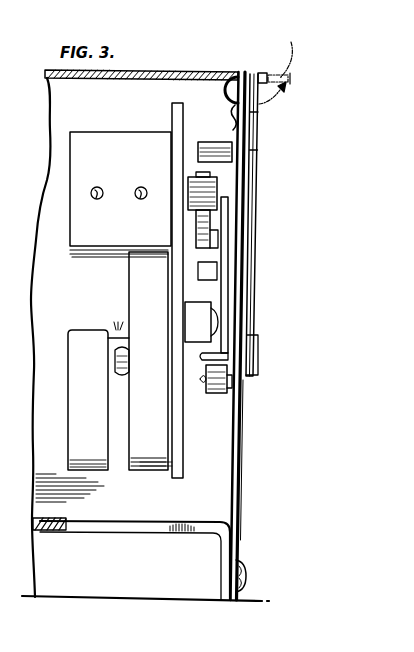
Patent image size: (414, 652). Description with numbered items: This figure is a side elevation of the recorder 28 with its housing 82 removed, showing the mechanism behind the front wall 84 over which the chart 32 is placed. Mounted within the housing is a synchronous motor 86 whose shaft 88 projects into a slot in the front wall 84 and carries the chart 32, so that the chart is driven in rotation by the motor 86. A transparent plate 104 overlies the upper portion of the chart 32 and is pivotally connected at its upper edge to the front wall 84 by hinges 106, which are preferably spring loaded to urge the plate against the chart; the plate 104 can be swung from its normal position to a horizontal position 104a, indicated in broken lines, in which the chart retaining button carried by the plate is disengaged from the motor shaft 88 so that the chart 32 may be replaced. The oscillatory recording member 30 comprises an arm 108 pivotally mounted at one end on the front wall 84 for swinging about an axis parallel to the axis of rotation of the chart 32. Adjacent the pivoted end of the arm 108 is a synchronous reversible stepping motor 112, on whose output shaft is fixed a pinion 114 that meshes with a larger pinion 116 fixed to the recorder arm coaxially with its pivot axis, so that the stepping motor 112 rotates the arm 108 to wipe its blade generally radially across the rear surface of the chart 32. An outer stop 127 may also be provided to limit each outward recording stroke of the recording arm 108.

The recorder 28 is at (188, 72).
The oscillatory recording member 30 is at (229, 313).
The chart 32 is at (248, 466).
The housing 82 is at (50, 78).
The front wall 84 is at (240, 517).
The synchronous motor 86 is at (140, 472).
The shaft 88 is at (199, 321).
The transparent plate 104 is at (249, 220).
The horizontal position 104a is at (290, 40).
The hinges 106 is at (261, 72).
The arm 108 is at (224, 320).
The synchronous reversible stepping motor 112 is at (140, 120).
The pinion 114 is at (192, 185).
The larger pinion 116 is at (197, 218).
The outer stop 127 is at (212, 142).